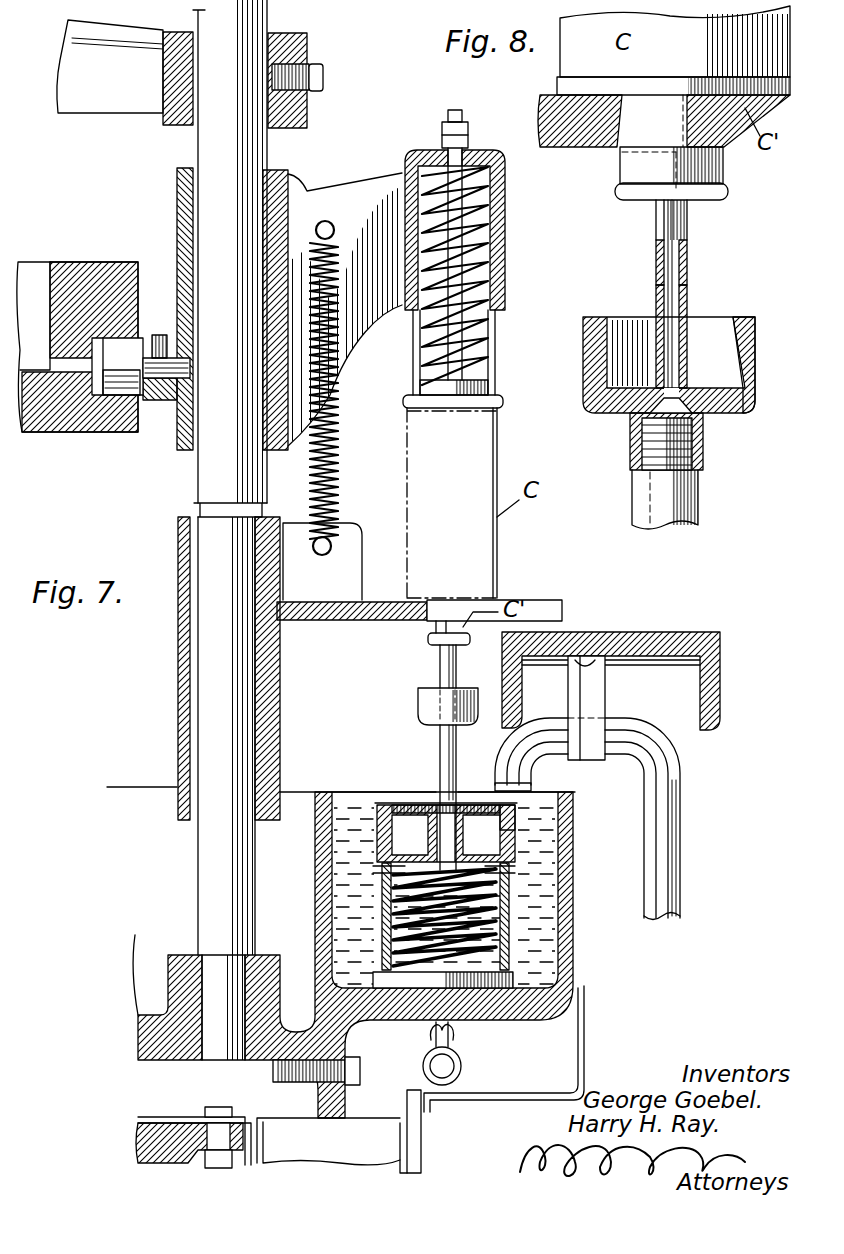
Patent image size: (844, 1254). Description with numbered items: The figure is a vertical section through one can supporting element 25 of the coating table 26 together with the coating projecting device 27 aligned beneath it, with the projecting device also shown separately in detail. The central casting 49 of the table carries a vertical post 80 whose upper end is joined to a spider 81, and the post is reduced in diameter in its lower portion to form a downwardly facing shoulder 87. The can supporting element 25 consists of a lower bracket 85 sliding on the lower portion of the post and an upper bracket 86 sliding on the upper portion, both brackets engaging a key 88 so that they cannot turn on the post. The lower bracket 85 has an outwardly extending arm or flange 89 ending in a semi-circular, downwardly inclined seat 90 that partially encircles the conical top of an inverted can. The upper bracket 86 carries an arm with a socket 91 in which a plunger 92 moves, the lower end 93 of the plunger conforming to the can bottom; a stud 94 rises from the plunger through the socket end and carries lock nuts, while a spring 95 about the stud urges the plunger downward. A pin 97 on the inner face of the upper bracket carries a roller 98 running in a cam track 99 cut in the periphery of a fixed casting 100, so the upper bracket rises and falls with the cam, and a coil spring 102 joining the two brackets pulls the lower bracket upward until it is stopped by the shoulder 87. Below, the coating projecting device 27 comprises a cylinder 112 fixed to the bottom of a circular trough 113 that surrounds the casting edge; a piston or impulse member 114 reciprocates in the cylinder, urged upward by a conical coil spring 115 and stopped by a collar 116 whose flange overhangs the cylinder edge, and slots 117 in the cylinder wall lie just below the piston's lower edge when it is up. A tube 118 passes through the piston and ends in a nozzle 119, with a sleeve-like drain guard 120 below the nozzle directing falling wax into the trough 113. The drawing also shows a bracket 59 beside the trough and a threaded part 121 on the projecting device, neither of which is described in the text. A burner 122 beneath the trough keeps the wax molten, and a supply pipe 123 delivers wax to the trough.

In FIG. 8, the can supporting element 25 is at (600, 130).
In FIG. 7, the can supporting element 25 is at (383, 622).
In FIG. 7, the coating table 26 is at (585, 1008).
In FIG. 8, the coating projecting device 27 is at (717, 328).
In FIG. 7, the coating projecting device 27 is at (430, 800).
In FIG. 7, the central casting 49 is at (168, 989).
In FIG. 7, the pipe bracket 59 is at (612, 634).
In FIG. 7, the vertical post 80 is at (204, 878).
In FIG. 7, the spider 81 is at (126, 95).
In FIG. 7, the lower bracket 85 is at (263, 713).
In FIG. 7, the upper bracket 86 is at (358, 187).
In FIG. 7, the shoulder 87 is at (193, 505).
In FIG. 7, the key 88 is at (194, 678).
In FIG. 7, the arm or flange 89 is at (352, 613).
In FIG. 7, the seat 90 is at (428, 628).
In FIG. 7, the socket 91 is at (486, 237).
In FIG. 7, the plunger 92 is at (492, 348).
In FIG. 7, the lower end of plunger 93 is at (493, 398).
In FIG. 7, the stud 94 is at (464, 150).
In FIG. 7, the spring 95 is at (484, 290).
In FIG. 7, the pin 97 is at (172, 372).
In FIG. 7, the roller 98 is at (128, 385).
In FIG. 7, the cam track 99 is at (106, 393).
In FIG. 7, the casting 100 is at (52, 416).
In FIG. 7, the coil spring 102 is at (336, 463).
In FIG. 7, the cylinder 112 is at (512, 884).
In FIG. 7, the circular trough 113 is at (520, 857).
In FIG. 7, the piston or impulse member 114 is at (520, 826).
In FIG. 7, the coil spring 115 is at (500, 933).
In FIG. 7, the collar 116 is at (515, 808).
In FIG. 7, the slots 117 is at (398, 872).
In FIG. 8, the tube 118 is at (697, 512).
In FIG. 7, the tube 118 is at (444, 740).
In FIG. 8, the nozzle 119 is at (688, 253).
In FIG. 7, the nozzle 119 is at (446, 657).
In FIG. 8, the drain guard 120 is at (747, 375).
In FIG. 7, the drain guard 120 is at (428, 702).
In FIG. 8, the nut 121 is at (617, 413).
In FIG. 7, the burner 122 is at (467, 1068).
In FIG. 7, the supply pipe 123 is at (665, 881).